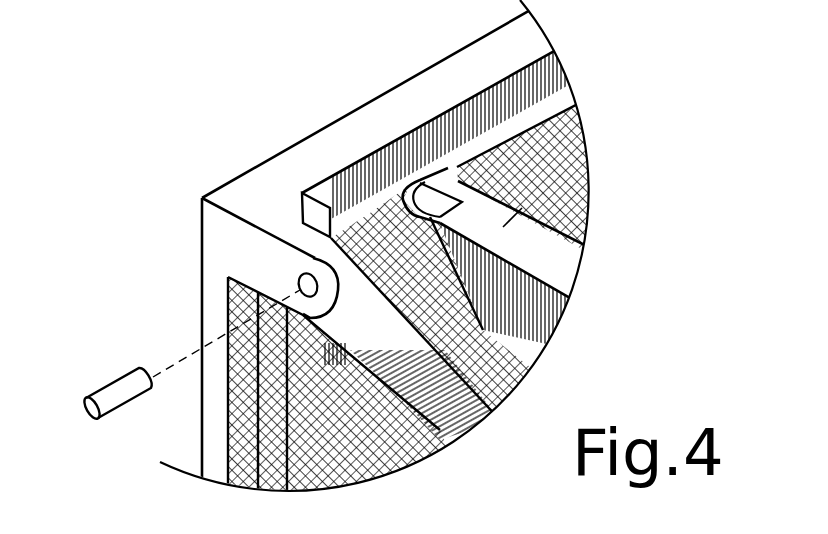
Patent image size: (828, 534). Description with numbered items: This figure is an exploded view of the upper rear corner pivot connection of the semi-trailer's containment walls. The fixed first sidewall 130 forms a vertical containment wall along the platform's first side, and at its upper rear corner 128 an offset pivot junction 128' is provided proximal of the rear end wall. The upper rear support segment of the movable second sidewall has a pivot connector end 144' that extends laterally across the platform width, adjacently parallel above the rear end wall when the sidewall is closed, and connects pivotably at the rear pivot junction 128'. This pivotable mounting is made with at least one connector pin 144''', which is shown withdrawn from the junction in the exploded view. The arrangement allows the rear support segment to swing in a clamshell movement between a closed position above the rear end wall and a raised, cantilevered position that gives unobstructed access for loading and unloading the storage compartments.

The upper rear corner 128 is at (213, 333).
The offset pivot junction 128' is at (288, 215).
The first sidewall 130 is at (403, 108).
The pivot connector end 144' is at (563, 259).
The connector pin 144''' is at (104, 365).